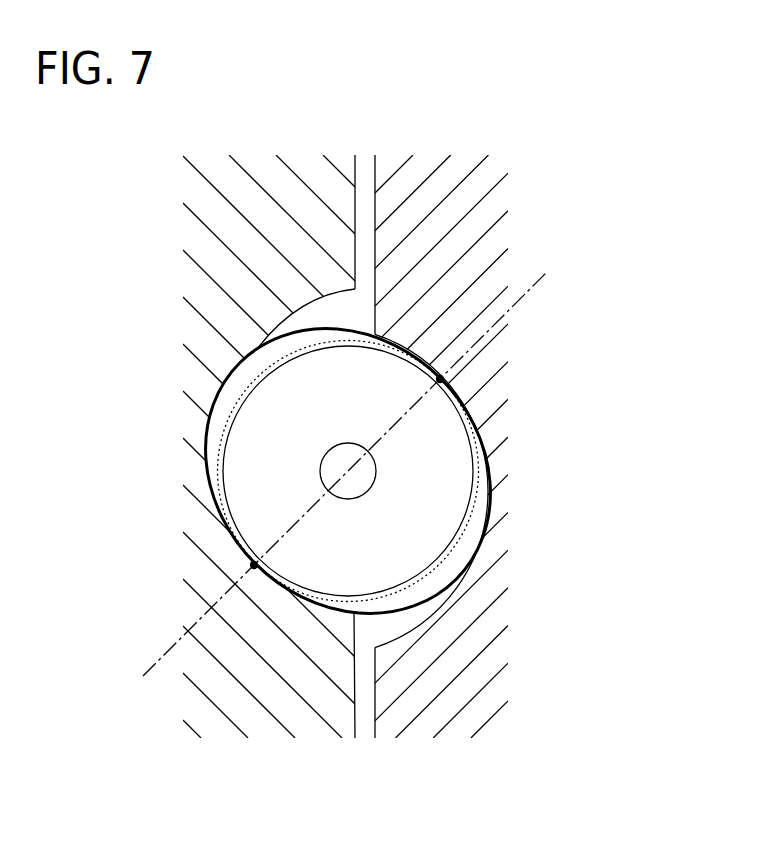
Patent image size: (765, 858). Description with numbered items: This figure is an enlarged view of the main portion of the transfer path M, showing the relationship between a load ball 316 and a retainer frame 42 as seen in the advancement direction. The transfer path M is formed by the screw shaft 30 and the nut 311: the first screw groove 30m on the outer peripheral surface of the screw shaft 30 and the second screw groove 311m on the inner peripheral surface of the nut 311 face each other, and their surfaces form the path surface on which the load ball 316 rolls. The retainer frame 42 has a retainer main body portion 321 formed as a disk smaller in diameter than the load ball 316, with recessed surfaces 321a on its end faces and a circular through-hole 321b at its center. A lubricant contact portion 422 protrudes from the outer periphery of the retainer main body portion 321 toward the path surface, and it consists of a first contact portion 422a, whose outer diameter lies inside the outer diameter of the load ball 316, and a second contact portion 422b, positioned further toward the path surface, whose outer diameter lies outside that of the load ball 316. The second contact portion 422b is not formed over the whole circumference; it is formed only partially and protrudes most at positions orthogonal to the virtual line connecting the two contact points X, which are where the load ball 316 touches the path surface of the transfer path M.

The screw shaft 30 is at (259, 697).
The first screw groove 30m is at (282, 310).
The nut 311 is at (448, 204).
The second screw groove 311m is at (410, 630).
The retainer frame 42 is at (395, 379).
The first contact portion 422a is at (226, 438).
The second contact portion 422b is at (232, 390).
The lubricant contact portion 422 is at (655, 530).
The retainer main body portion 321 is at (417, 473).
The recessed surface 321a is at (418, 485).
The circular through-hole 321b is at (340, 446).
The load ball 316 is at (472, 520).
The contact point X is at (438, 379).
The transfer path M is at (380, 628).